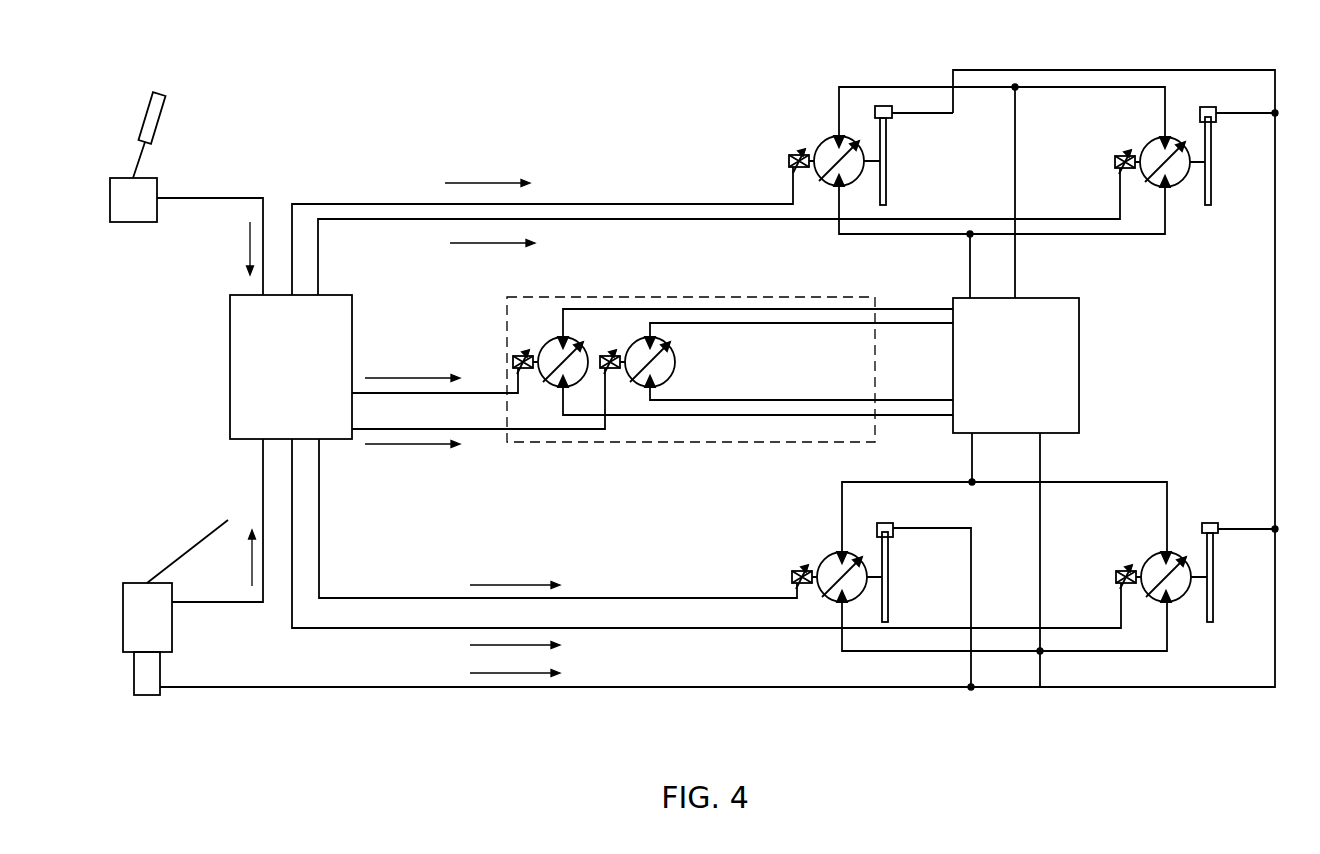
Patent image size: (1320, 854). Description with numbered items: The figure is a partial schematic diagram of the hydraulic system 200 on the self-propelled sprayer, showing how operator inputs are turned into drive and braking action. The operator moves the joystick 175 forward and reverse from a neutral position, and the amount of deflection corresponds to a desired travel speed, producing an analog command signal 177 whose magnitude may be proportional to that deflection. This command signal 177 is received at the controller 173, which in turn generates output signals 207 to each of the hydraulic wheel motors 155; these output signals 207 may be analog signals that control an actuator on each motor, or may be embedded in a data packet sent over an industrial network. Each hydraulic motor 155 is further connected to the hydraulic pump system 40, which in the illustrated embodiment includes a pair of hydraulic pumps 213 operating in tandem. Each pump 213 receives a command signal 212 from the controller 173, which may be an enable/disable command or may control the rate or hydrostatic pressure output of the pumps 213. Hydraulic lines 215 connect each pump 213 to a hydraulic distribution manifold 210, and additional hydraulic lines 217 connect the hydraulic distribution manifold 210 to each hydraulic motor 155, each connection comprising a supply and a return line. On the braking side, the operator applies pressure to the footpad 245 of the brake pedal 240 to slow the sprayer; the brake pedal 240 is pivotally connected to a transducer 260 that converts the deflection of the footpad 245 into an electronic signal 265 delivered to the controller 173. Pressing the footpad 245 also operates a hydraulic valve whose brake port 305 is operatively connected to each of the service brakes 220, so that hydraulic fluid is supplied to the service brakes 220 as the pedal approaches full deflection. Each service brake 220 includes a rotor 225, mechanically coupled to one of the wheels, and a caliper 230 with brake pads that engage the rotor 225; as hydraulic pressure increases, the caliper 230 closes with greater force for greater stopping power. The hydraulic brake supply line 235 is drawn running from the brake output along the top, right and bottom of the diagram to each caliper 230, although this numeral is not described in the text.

The hydraulic system 200 is at (342, 72).
The joystick 175 is at (137, 223).
The command signal 177 is at (222, 198).
The controller 173 is at (230, 372).
The output signals 207 is at (590, 218).
The electronic signal 265 is at (263, 475).
The brake pedal 240 is at (524, 611).
The footpad 245 is at (203, 538).
The transducer 260 is at (172, 625).
The brake port 305 is at (165, 700).
The hydraulic pump system 40 is at (652, 371).
The hydraulic pumps 213 is at (536, 333).
The command signal 212 is at (480, 393).
The hydraulic lines 215 is at (740, 323).
The hydraulic distribution manifold 210 is at (1079, 368).
The hydraulic lines 217 is at (975, 254).
The hydraulic wheel motor 155 is at (821, 193).
The service brake 220 is at (1066, 382).
The rotor 225 is at (886, 182).
The caliper 230 is at (880, 106).
The brake hydraulic line 235 is at (1012, 70).